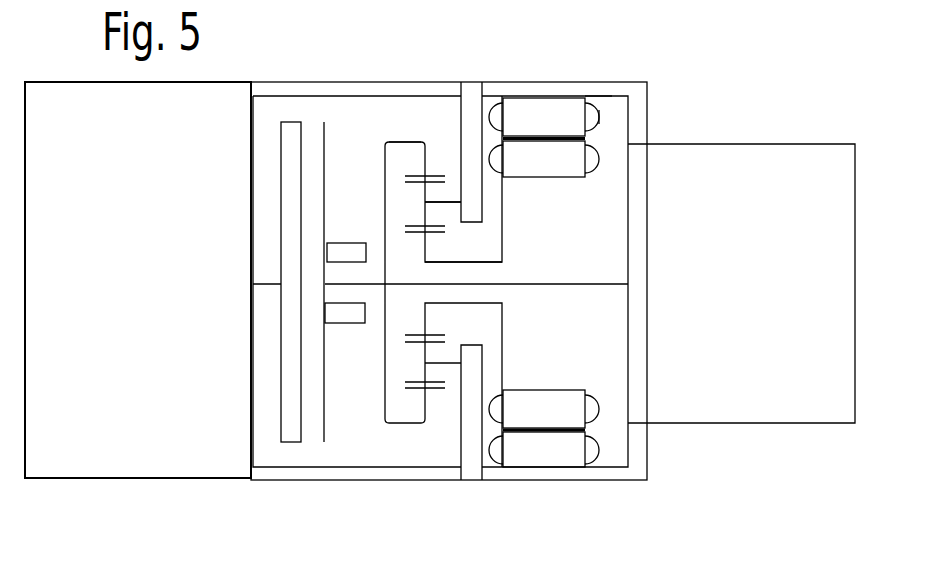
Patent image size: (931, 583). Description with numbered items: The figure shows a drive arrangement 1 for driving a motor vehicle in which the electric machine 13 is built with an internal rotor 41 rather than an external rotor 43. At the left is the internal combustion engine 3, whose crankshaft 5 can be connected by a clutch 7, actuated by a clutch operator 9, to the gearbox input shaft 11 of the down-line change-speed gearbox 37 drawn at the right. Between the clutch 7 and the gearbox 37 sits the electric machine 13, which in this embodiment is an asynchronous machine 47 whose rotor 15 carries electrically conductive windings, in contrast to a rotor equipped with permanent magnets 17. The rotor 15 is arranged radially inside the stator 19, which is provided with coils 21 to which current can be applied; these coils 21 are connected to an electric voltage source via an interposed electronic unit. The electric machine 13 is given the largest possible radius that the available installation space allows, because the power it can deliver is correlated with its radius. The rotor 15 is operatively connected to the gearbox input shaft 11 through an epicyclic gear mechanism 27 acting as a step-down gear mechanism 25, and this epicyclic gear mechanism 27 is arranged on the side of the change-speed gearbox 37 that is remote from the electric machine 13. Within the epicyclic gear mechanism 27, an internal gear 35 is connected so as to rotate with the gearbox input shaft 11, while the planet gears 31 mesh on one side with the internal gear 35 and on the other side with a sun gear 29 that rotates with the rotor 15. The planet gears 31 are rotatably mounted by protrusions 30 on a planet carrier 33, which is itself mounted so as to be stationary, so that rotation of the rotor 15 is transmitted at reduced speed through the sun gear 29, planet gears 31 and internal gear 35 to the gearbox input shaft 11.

The drive arrangement 1 is at (66, 68).
The internal combustion engine 3 is at (102, 462).
The crankshaft 5 is at (263, 287).
The clutch 7 is at (290, 446).
The clutch operator 9 is at (345, 315).
The gearbox input shaft 11 is at (601, 288).
The electric machine 13 is at (596, 455).
The rotor 15 is at (545, 425).
The permanent magnets 17 is at (555, 152).
The stator 19 is at (496, 462).
The coils 21 is at (482, 457).
The step-down gear mechanism 25 is at (418, 141).
The epicyclic gear mechanism 27 is at (403, 427).
The sun gear 29 is at (440, 247).
The protrusions 30 is at (447, 197).
The planet gears 31 is at (413, 198).
The planet carrier 33 is at (453, 197).
The internal gear 35 is at (401, 141).
The change-speed gearbox 37 is at (727, 405).
The internal rotor 41 is at (593, 148).
The external rotor 43 is at (606, 112).
The asynchronous machine 47 is at (598, 96).